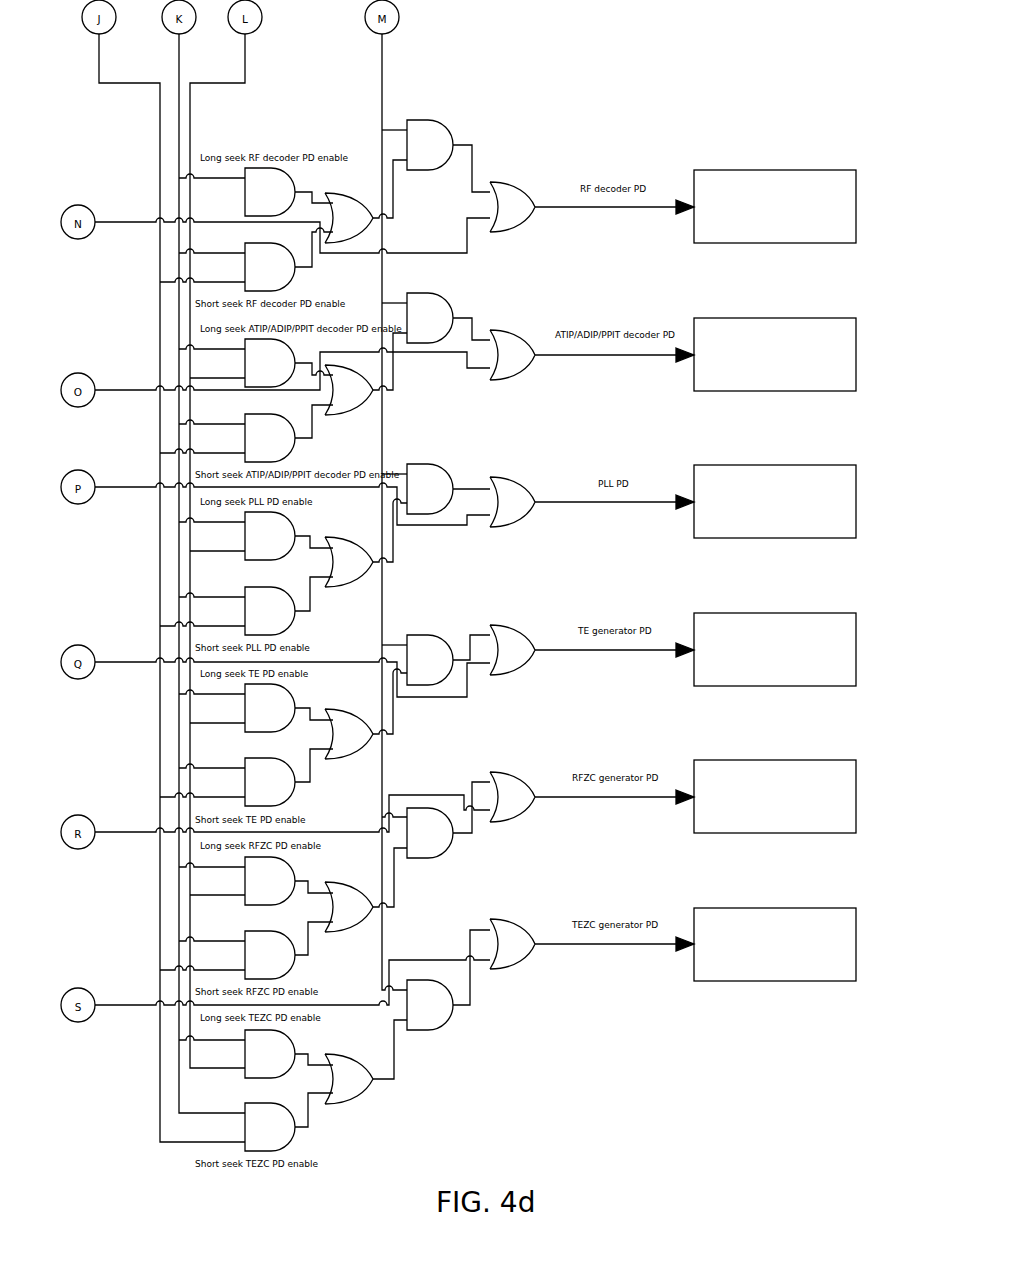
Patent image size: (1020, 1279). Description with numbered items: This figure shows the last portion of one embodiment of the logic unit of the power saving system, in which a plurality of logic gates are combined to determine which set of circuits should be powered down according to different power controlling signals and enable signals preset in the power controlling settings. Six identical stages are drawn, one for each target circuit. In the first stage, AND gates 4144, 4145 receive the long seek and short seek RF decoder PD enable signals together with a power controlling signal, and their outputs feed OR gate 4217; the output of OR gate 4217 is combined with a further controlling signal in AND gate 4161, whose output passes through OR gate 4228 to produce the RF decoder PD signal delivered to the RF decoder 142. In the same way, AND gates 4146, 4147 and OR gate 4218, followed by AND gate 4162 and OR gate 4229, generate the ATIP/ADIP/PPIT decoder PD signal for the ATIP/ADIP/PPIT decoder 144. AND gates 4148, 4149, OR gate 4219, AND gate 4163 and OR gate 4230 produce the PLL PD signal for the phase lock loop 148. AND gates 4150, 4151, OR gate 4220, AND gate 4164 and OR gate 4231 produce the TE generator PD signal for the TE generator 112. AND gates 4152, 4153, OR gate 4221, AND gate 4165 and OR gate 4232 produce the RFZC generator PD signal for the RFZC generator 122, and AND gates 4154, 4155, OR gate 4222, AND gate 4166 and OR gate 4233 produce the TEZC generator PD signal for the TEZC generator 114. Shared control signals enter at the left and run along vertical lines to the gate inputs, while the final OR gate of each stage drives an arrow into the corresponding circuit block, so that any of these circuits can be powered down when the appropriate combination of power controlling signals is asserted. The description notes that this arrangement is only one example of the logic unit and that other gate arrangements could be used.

The AND gate 4144 is at (270, 192).
The AND gate 4145 is at (270, 267).
The AND gate 4146 is at (270, 363).
The AND gate 4147 is at (270, 438).
The AND gate 4148 is at (270, 536).
The AND gate 4149 is at (270, 611).
The AND gate 4150 is at (270, 708).
The AND gate 4151 is at (270, 782).
The AND gate 4152 is at (270, 881).
The AND gate 4153 is at (270, 955).
The AND gate 4154 is at (270, 1054).
The AND gate 4155 is at (270, 1127).
The AND gate 4161 is at (430, 145).
The AND gate 4162 is at (430, 318).
The AND gate 4163 is at (430, 489).
The AND gate 4164 is at (430, 660).
The AND gate 4165 is at (430, 833).
The AND gate 4166 is at (430, 1005).
The OR gate 4217 is at (349, 218).
The OR gate 4218 is at (349, 390).
The OR gate 4219 is at (349, 562).
The OR gate 4220 is at (349, 734).
The OR gate 4221 is at (349, 907).
The OR gate 4222 is at (349, 1079).
The OR gate 4228 is at (512, 207).
The OR gate 4229 is at (512, 355).
The OR gate 4230 is at (512, 502).
The OR gate 4231 is at (512, 650).
The OR gate 4232 is at (512, 797).
The OR gate 4233 is at (512, 944).
The RF decoder 142 is at (816, 244).
The ATIP/ADIP/PPIT decoder 144 is at (816, 392).
The phase lock loop (PLL) 148 is at (816, 539).
The TE(DPD/DPP) generator 112 is at (816, 687).
The RFZC generator 122 is at (816, 834).
The TEZC generator 114 is at (816, 982).